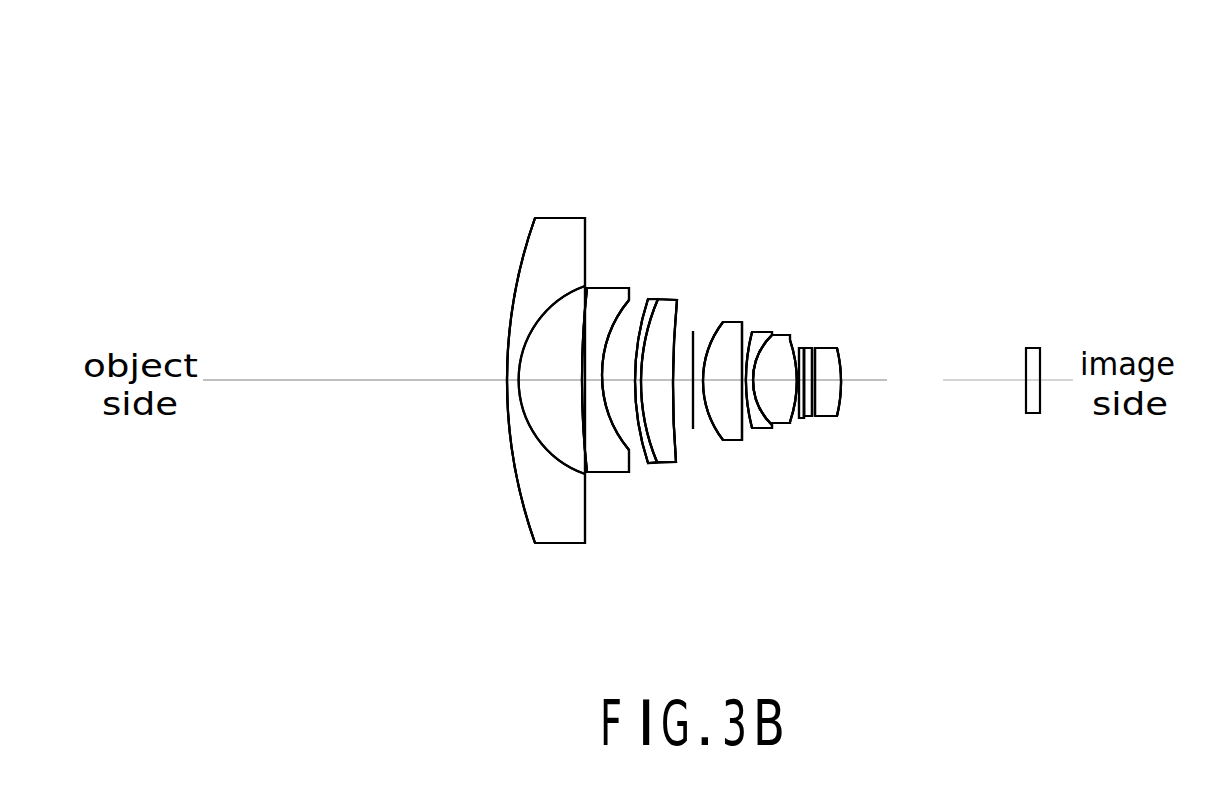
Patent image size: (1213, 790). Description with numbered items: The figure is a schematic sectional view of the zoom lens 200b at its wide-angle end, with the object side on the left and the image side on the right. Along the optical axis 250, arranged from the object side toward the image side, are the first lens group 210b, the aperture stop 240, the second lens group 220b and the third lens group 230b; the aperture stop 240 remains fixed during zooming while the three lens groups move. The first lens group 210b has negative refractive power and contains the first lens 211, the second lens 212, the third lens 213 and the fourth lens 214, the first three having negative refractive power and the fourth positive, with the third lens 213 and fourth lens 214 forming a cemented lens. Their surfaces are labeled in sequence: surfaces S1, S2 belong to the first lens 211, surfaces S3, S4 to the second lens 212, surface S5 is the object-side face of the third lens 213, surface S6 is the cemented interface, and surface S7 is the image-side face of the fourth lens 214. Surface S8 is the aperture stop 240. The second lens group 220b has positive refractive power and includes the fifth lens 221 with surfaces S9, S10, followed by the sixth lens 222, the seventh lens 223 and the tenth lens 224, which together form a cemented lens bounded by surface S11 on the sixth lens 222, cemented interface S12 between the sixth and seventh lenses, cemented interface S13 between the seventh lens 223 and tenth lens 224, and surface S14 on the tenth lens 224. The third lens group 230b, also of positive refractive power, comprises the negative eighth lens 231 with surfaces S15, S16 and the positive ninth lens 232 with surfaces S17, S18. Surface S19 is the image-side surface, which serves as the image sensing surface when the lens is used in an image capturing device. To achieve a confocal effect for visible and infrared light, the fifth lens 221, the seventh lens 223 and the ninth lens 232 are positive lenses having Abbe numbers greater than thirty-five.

The zoom lens 200b is at (1063, 657).
The first lens group 210b is at (697, 83).
The first lens 211 is at (542, 267).
The second lens 212 is at (603, 303).
The third lens 213 is at (651, 318).
The fourth lens 214 is at (669, 335).
The second lens group 220b is at (903, 187).
The fifth lens 221 is at (733, 335).
The sixth lens 222 is at (758, 330).
The seventh lens 223 is at (788, 335).
The tenth lens 224 is at (805, 346).
The third lens group 230b is at (1028, 220).
The eighth lens 231 is at (822, 350).
The ninth lens 232 is at (838, 348).
The aperture stop 240 is at (694, 330).
The optical axis 250 is at (342, 380).
The surface S1 is at (513, 494).
The surface S2 is at (550, 454).
The surface S3 is at (593, 459).
The surface S4 is at (631, 457).
The surface S5 is at (645, 442).
The surface S6 is at (654, 449).
The surface S7 is at (683, 437).
The surface S8 is at (700, 434).
The surface S9 is at (717, 427).
The surface S10 is at (750, 440).
The surface S11 is at (760, 432).
The surface S12 is at (777, 424).
The surface S13 is at (800, 424).
The surface S14 is at (826, 406).
The surface S15 is at (838, 355).
The surface S16 is at (828, 376).
The surface S17 is at (846, 416).
The surface S18 is at (846, 421).
The surface S19 is at (1029, 355).